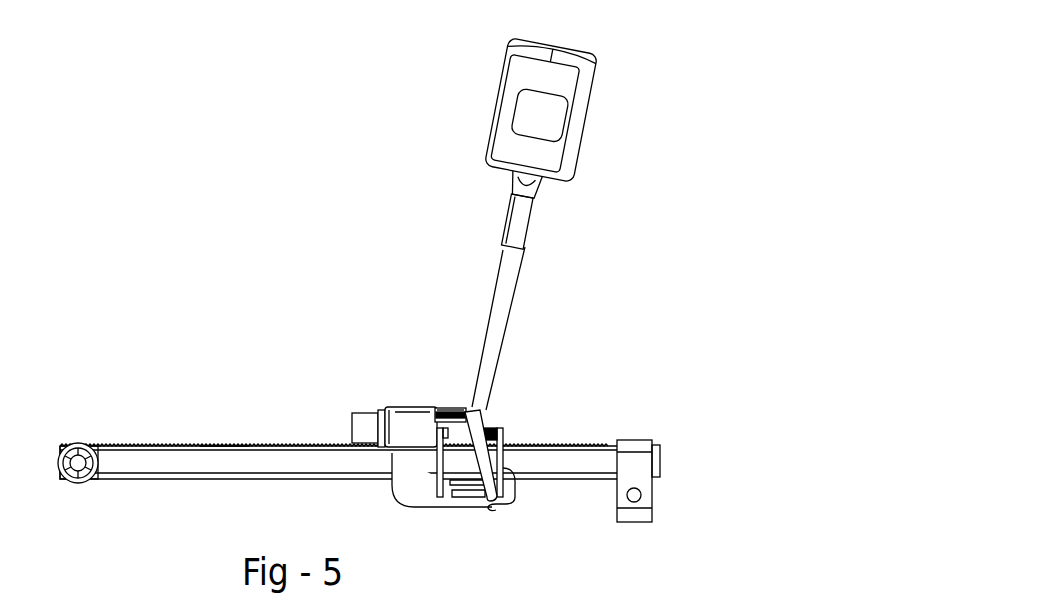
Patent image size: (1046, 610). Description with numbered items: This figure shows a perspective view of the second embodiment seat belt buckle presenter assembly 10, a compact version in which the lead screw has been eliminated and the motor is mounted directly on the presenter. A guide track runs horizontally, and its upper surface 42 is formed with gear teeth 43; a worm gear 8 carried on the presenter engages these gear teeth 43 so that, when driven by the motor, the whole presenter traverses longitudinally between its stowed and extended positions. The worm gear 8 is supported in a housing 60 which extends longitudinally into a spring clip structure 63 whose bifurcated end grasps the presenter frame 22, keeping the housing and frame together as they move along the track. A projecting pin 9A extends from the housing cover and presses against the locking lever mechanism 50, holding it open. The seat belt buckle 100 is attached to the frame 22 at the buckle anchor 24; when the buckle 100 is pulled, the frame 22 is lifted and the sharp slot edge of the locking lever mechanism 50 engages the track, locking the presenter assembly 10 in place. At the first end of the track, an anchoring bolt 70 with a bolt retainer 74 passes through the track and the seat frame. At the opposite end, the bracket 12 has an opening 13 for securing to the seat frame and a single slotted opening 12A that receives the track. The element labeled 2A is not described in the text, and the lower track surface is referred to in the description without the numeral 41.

The buckle 100 is at (493, 95).
The seat belt buckle presenter assembly 10 is at (411, 344).
The buckle anchor 24 is at (448, 408).
The projecting pin 9A is at (457, 407).
The worm gear 8 is at (402, 415).
The locking lever mechanism 50 is at (470, 425).
The presenter frame 22 is at (513, 440).
The end cap 2A is at (348, 425).
The anchoring bolt 70 is at (75, 453).
The bolt retainer 74 is at (83, 480).
The upper surface of the guide track 42 is at (147, 443).
The gear teeth 43 is at (225, 443).
The rail 41 is at (157, 480).
The housing 60 is at (412, 487).
The spring clip structure 63 is at (502, 507).
The bracket 12 is at (625, 518).
The slotted opening 12A is at (650, 463).
The opening 13 is at (640, 495).